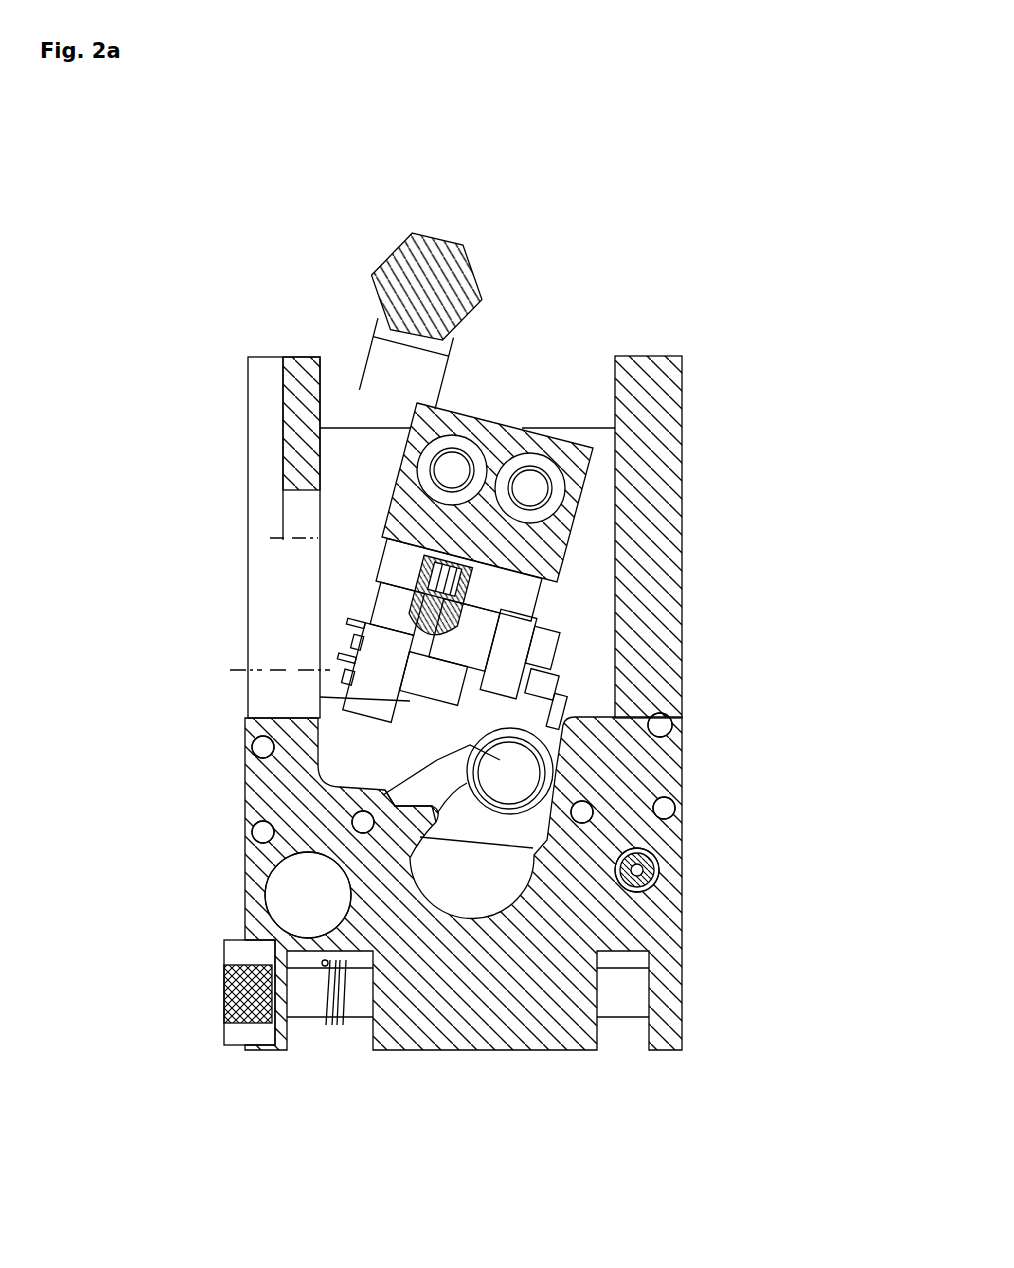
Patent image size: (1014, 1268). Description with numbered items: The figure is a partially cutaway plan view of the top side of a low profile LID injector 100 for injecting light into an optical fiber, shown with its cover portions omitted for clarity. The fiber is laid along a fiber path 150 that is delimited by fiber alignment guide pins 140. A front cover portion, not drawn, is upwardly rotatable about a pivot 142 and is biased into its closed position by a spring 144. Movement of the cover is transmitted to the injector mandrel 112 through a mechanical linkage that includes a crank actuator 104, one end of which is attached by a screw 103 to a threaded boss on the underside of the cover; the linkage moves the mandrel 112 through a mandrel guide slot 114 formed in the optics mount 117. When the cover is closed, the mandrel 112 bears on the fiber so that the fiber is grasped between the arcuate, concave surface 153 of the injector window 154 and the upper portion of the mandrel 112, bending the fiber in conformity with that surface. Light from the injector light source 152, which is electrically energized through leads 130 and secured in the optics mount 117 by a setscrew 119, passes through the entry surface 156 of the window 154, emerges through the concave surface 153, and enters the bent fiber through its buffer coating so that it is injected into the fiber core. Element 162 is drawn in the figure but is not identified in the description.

The LID injector 100 is at (589, 246).
The screw 103 is at (420, 272).
The crank actuator 104 is at (410, 366).
The injector mandrel 112 is at (527, 772).
The mandrel guide slot 114 is at (488, 840).
The optics mount 117 is at (405, 565).
The setscrew 119 is at (415, 600).
The leads 130 is at (330, 668).
The fiber alignment guide pins 140 is at (268, 747).
The pivot 142 is at (262, 1000).
The spring 144 is at (335, 1027).
The fiber path 150 is at (293, 795).
The injector light source 152 is at (405, 655).
The concave surface 153 is at (540, 760).
The injector window 154 is at (520, 703).
The entry surface 156 is at (483, 680).
The lever 162 is at (456, 735).